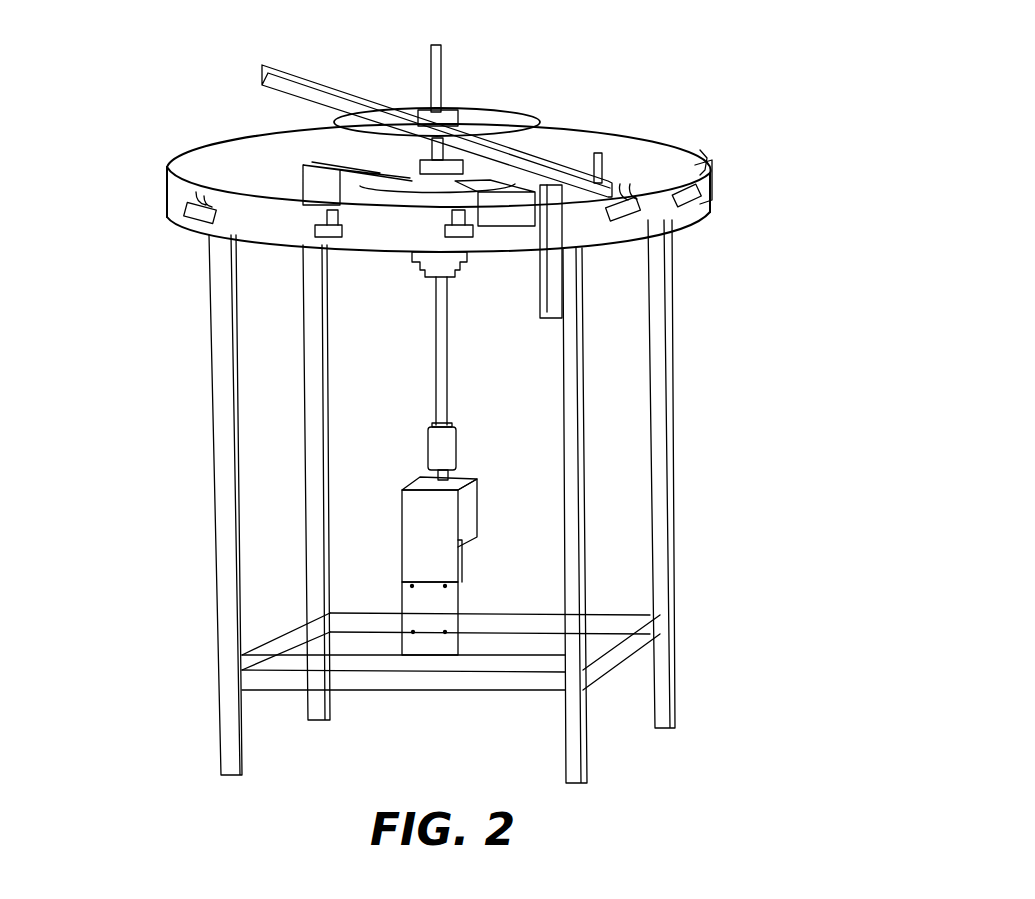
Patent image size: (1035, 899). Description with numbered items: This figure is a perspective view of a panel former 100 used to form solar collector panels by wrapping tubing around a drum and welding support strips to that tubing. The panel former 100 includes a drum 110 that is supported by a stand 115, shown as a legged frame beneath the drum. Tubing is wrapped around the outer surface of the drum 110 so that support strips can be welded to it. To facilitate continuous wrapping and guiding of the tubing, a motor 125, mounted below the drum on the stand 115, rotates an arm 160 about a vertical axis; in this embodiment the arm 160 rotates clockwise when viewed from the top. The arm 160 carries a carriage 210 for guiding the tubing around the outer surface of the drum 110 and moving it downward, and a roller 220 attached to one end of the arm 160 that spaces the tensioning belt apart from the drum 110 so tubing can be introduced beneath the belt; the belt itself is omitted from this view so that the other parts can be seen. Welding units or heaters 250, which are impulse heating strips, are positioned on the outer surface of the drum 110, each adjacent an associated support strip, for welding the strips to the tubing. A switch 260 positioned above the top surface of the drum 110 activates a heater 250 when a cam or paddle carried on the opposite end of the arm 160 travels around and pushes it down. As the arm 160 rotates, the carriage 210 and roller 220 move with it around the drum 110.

The panel former 100 is at (840, 161).
The drum 110 is at (672, 226).
The stand 115 is at (652, 513).
The motor 125 is at (407, 560).
The arm 160 is at (265, 105).
The carriage 210 is at (482, 237).
The roller 220 is at (553, 273).
The welding unit/heater 250 is at (323, 240).
The switch 260 is at (708, 140).